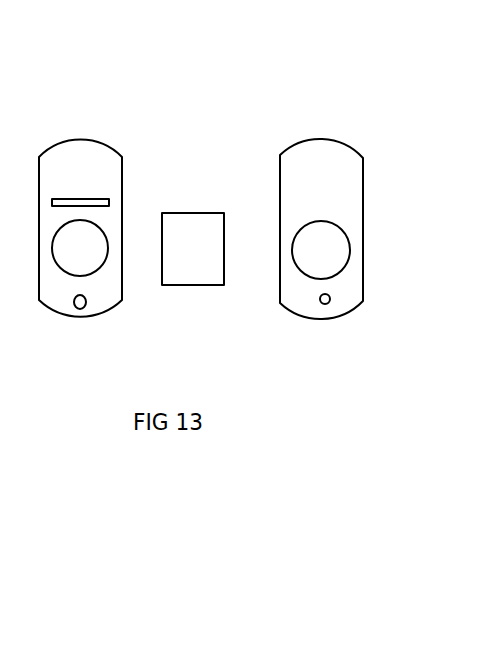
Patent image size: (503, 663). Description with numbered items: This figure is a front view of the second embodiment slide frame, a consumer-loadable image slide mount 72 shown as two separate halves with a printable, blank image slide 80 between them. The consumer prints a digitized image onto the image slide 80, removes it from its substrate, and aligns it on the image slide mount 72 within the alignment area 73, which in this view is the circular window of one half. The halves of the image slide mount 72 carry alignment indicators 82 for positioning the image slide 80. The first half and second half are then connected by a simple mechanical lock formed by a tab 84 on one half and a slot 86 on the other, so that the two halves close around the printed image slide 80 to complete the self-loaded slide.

The image slide mount 72 is at (311, 338).
The alignment area 73 is at (328, 238).
The image slide 80 is at (192, 225).
The alignment indicators 82 is at (70, 200).
The tab 84 is at (87, 298).
The slot 86 is at (330, 295).